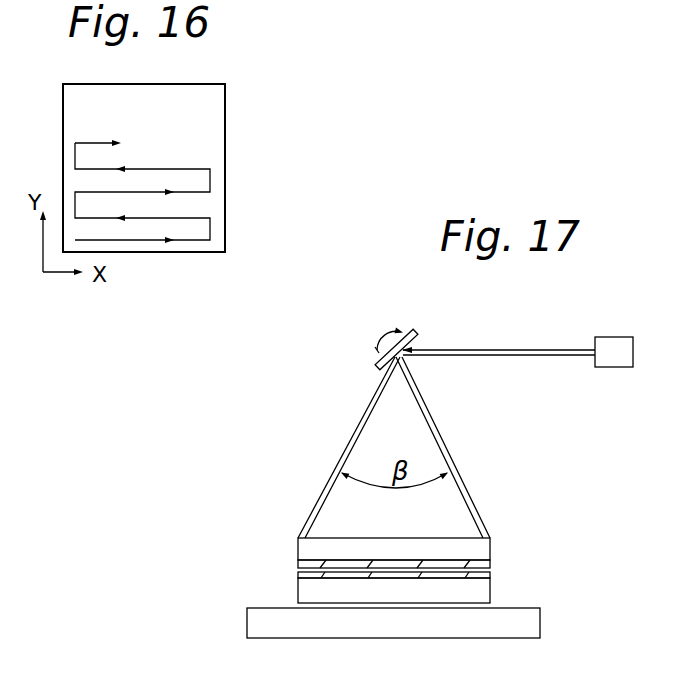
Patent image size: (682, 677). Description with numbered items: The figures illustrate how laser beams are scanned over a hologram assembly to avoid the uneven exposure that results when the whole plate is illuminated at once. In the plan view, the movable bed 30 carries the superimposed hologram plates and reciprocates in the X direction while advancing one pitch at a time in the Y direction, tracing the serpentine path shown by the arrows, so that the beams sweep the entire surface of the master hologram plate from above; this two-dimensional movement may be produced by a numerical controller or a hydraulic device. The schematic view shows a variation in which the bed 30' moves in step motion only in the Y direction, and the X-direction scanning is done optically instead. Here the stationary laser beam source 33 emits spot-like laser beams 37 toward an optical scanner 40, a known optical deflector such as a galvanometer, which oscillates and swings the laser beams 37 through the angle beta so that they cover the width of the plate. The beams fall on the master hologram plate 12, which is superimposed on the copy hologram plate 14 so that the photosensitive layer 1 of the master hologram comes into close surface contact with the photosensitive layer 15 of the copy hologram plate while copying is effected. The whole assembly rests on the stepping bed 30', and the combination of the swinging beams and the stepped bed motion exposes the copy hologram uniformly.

In FIG. 16, the movable bed 30 is at (172, 168).
In FIG. 17, the optical scanner 40 is at (408, 328).
In FIG. 17, the laser beam source 33 is at (613, 336).
In FIG. 17, the laser beams 37 is at (324, 488).
In FIG. 17, the master hologram plate 12 is at (499, 551).
In FIG. 17, the photosensitive layer 1 is at (403, 566).
In FIG. 17, the photosensitive layer 15 is at (363, 577).
In FIG. 17, the copy hologram plate 14 is at (498, 588).
In FIG. 17, the bed 30' is at (360, 616).